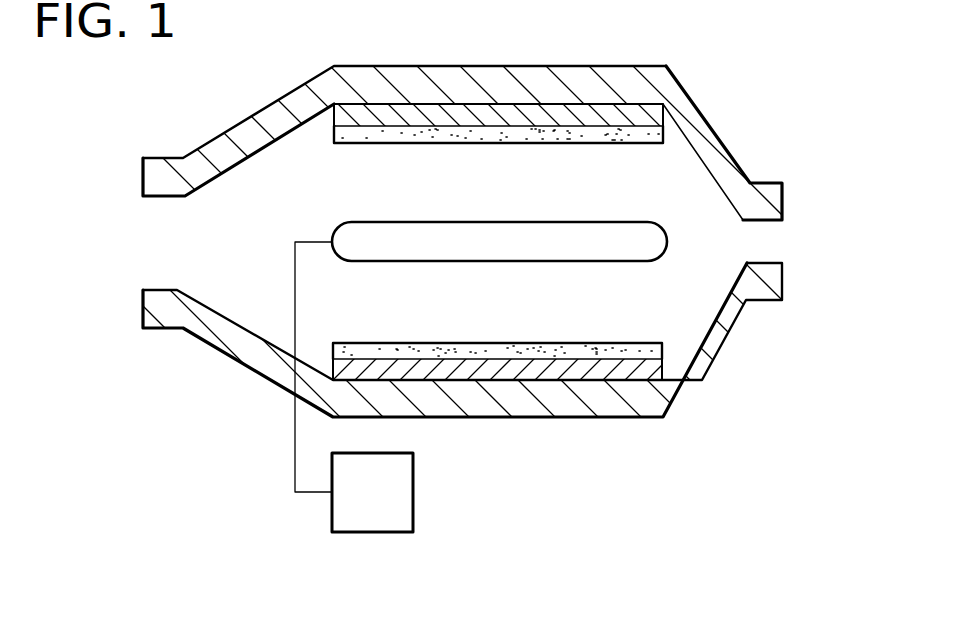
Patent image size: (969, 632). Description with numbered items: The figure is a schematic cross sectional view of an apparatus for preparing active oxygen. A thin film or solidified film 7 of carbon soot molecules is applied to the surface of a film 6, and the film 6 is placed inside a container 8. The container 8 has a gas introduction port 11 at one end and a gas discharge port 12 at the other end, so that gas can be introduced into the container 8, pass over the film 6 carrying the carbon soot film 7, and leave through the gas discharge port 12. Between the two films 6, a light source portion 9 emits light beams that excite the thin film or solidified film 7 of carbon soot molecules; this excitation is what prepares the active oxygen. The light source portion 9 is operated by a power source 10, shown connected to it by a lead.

The film 6 is at (650, 118).
The thin film or solidified film of carbon soot molecules 7 is at (652, 133).
The container 8 is at (653, 80).
The light source portion 9 is at (627, 238).
The power source 10 is at (400, 483).
The gas introduction port 11 is at (165, 252).
The gas discharge port 12 is at (768, 240).